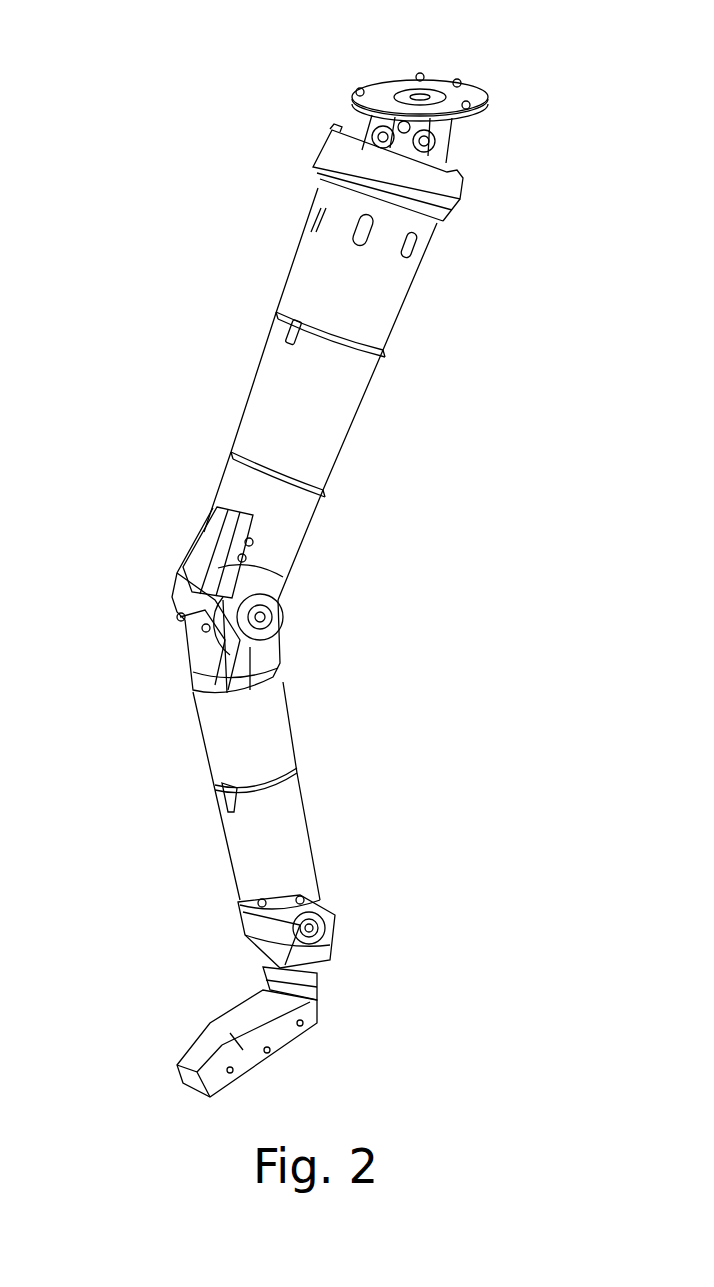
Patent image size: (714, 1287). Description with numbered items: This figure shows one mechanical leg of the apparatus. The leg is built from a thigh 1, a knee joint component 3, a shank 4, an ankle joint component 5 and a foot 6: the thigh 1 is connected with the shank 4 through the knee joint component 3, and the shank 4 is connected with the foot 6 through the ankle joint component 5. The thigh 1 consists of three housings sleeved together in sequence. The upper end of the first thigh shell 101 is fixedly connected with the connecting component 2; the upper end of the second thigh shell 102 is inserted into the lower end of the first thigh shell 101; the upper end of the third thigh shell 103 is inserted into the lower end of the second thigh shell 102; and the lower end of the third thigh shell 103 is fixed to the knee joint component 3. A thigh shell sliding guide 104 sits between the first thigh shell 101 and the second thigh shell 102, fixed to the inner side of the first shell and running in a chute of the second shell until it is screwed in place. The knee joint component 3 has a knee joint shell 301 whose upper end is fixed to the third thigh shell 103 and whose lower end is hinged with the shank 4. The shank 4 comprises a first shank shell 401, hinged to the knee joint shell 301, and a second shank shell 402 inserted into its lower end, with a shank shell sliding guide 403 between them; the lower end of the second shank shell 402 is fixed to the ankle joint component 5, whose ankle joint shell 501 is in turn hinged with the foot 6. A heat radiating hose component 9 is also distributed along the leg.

The thigh 1 is at (356, 362).
The connecting component 2 is at (477, 98).
The knee joint component 3 is at (220, 600).
The shank 4 is at (305, 781).
The ankle joint component 5 is at (214, 909).
The foot 6 is at (207, 1049).
The heat radiating hose component 9 is at (212, 540).
The first thigh shell 101 is at (382, 280).
The second thigh shell 102 is at (323, 430).
The third thigh shell 103 is at (282, 535).
The thigh shell sliding guide 104 is at (295, 333).
The knee joint shell 301 is at (173, 617).
The first shank shell 401 is at (268, 735).
The second shank shell 402 is at (270, 855).
The shank shell sliding guide 403 is at (222, 795).
The ankle joint shell 501 is at (263, 932).